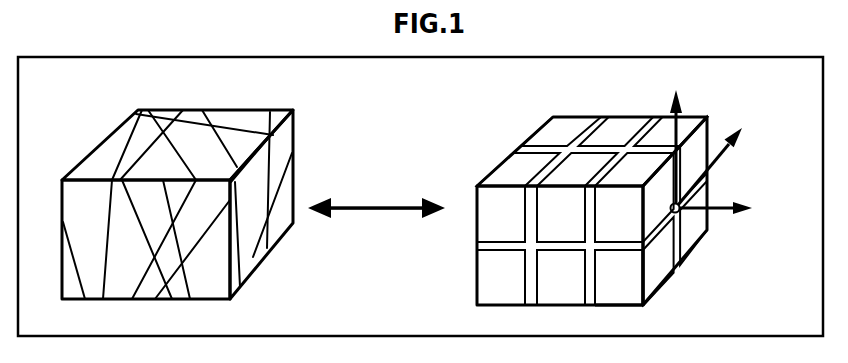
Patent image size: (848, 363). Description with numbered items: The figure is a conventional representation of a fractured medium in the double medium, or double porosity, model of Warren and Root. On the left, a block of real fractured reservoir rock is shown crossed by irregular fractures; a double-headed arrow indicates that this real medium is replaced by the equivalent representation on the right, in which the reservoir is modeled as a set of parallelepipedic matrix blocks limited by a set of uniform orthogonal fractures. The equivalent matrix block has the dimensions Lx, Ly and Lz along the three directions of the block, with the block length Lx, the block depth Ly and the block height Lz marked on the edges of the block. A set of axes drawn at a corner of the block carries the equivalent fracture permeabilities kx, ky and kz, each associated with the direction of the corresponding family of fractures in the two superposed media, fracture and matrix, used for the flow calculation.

The equivalent fracture permeability in the x direction kx is at (728, 210).
The equivalent fracture permeability in the y direction ky is at (720, 166).
The equivalent fracture permeability in the z direction kz is at (685, 141).
The matrix block dimension in the x direction Lx is at (619, 294).
The matrix block dimension in the y direction Ly is at (659, 288).
The matrix block dimension in the z direction Lz is at (630, 277).